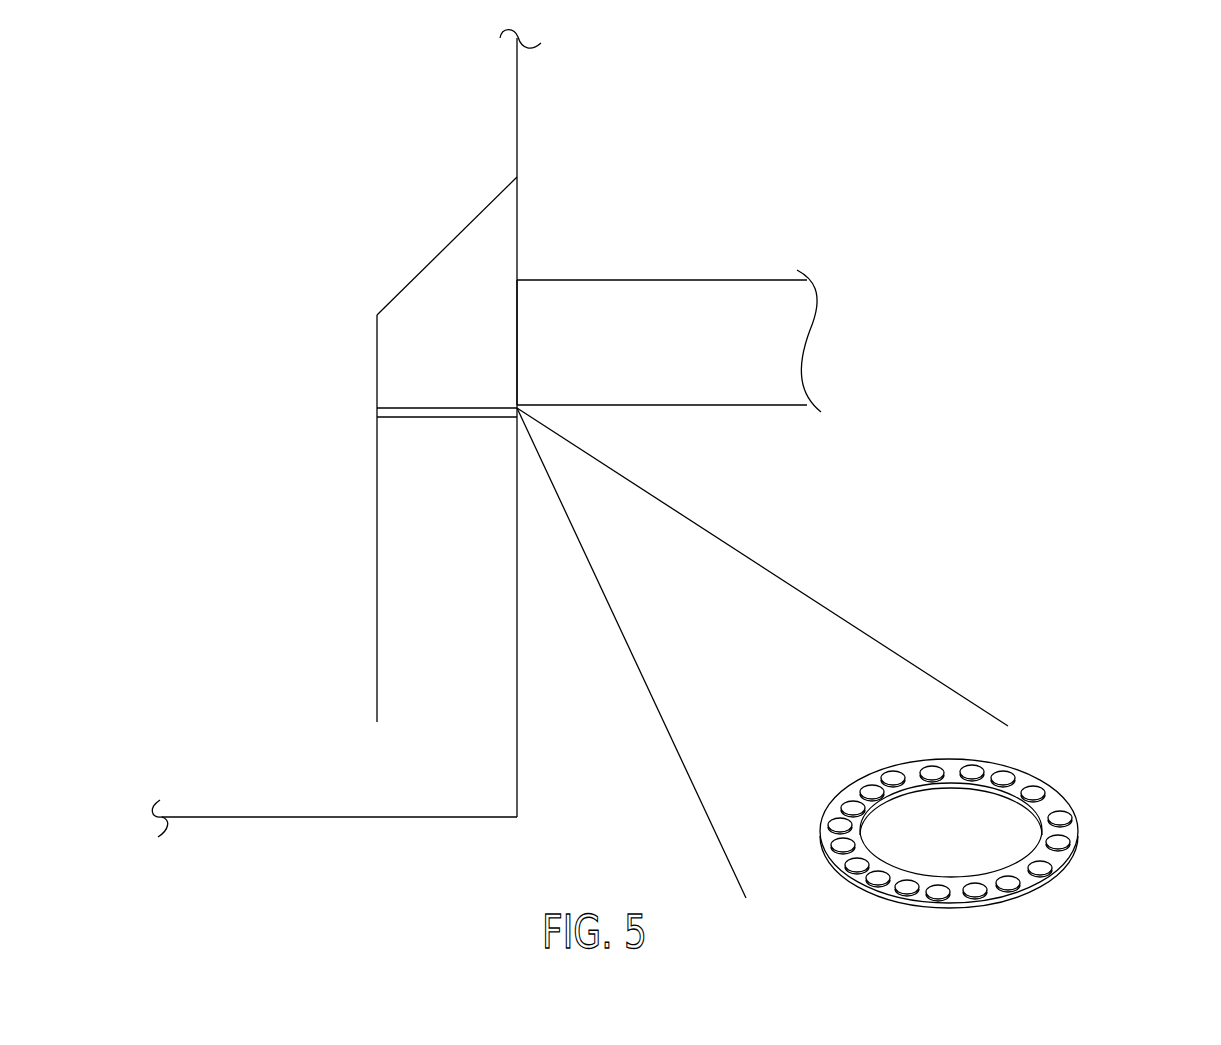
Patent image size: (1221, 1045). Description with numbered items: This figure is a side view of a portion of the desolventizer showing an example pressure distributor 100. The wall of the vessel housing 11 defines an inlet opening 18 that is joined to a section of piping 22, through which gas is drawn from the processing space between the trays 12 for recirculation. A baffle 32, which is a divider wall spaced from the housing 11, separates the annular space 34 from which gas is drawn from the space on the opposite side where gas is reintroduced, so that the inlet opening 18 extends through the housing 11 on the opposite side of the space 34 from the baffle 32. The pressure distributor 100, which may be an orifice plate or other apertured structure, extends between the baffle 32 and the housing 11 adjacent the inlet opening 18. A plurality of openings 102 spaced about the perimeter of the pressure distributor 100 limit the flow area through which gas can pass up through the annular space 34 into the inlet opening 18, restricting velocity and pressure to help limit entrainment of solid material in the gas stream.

The vessel housing 11 is at (517, 132).
The tray 12 is at (237, 813).
The inlet opening 18 is at (517, 350).
The piping 22 is at (675, 280).
The baffle 32 is at (323, 650).
The annular space 34 is at (403, 540).
The pressure distributor 100 is at (377, 412).
The openings 102 is at (1055, 840).